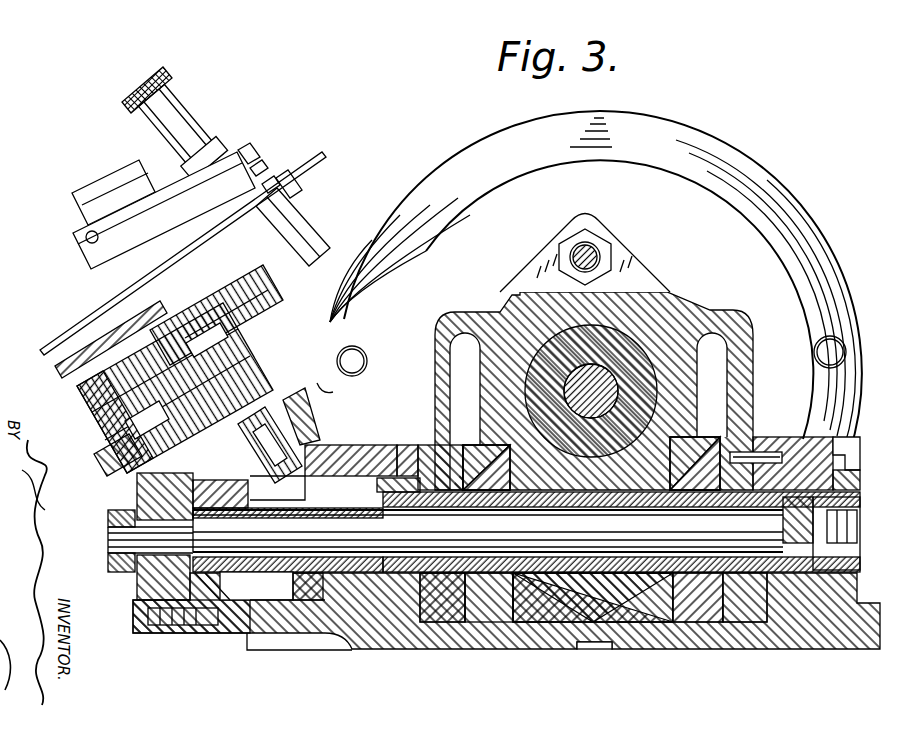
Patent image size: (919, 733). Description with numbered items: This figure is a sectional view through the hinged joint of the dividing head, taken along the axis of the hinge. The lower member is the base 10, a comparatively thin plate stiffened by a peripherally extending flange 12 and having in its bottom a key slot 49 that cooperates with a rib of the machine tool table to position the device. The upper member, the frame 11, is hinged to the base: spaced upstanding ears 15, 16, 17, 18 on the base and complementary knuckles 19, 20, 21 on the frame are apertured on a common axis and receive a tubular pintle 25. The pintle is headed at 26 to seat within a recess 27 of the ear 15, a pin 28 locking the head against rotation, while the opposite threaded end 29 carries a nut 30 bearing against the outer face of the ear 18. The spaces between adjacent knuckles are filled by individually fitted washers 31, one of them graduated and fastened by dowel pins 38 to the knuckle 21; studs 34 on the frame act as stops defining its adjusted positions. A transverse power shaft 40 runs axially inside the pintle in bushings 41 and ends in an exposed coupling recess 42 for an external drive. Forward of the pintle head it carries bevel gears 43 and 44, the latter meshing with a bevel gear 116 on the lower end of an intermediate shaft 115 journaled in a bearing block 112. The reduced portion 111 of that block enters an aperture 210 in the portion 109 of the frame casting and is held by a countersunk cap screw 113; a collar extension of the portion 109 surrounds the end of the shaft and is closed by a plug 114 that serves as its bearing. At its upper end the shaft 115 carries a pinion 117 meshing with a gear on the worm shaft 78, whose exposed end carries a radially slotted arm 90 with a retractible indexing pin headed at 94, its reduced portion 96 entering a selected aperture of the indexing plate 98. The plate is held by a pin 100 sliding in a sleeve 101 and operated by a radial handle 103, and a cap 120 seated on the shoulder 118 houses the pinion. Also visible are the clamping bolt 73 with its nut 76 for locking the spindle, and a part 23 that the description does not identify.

The base 10 is at (548, 630).
The frame 11 is at (810, 238).
The peripherally extending flange 12 is at (868, 605).
The upstanding ear 15 is at (386, 446).
The upstanding ear 16 is at (480, 446).
The upstanding ear 17 is at (690, 446).
The upstanding ear 18 is at (785, 446).
The knuckle 19 is at (424, 446).
The knuckle 20 is at (668, 625).
The knuckle 21 is at (752, 625).
The bore 23 is at (591, 391).
The tubular pintle 25 is at (548, 497).
The head 26 is at (380, 490).
The recess 27 is at (332, 476).
The pin 28 is at (405, 446).
The threaded end 29 is at (858, 492).
The nut 30 is at (860, 452).
The washer 31 is at (480, 625).
The stud 34 is at (358, 354).
The dowel pin 38 is at (748, 452).
The transverse shaft 40 is at (262, 598).
The bushing 41 is at (417, 513).
The coupling recess 42 is at (857, 526).
The bevel gear 43 is at (312, 582).
The bevel gear 44 is at (222, 586).
The key slot 49 is at (592, 640).
The bolt 73 is at (598, 234).
The nut 76 is at (604, 252).
The worm shaft 78 is at (122, 196).
The arm 90 is at (167, 205).
The head 94 is at (168, 98).
The reduced portion 96 is at (240, 160).
The indexing plate 98 is at (245, 190).
The pin 100 is at (272, 188).
The sleeve 101 is at (290, 220).
The handle 103 is at (318, 156).
The portion of frame casting 109 is at (322, 388).
The reduced portion 111 is at (250, 424).
The bearing block 112 is at (128, 455).
The cap screw 113 is at (205, 368).
The plug 114 is at (137, 585).
The shaft 115 is at (150, 380).
The bevel gear 116 is at (306, 438).
The pinion 117 is at (72, 378).
The shoulder 118 is at (92, 420).
The cap 120 is at (322, 228).
The aperture 210 is at (150, 482).